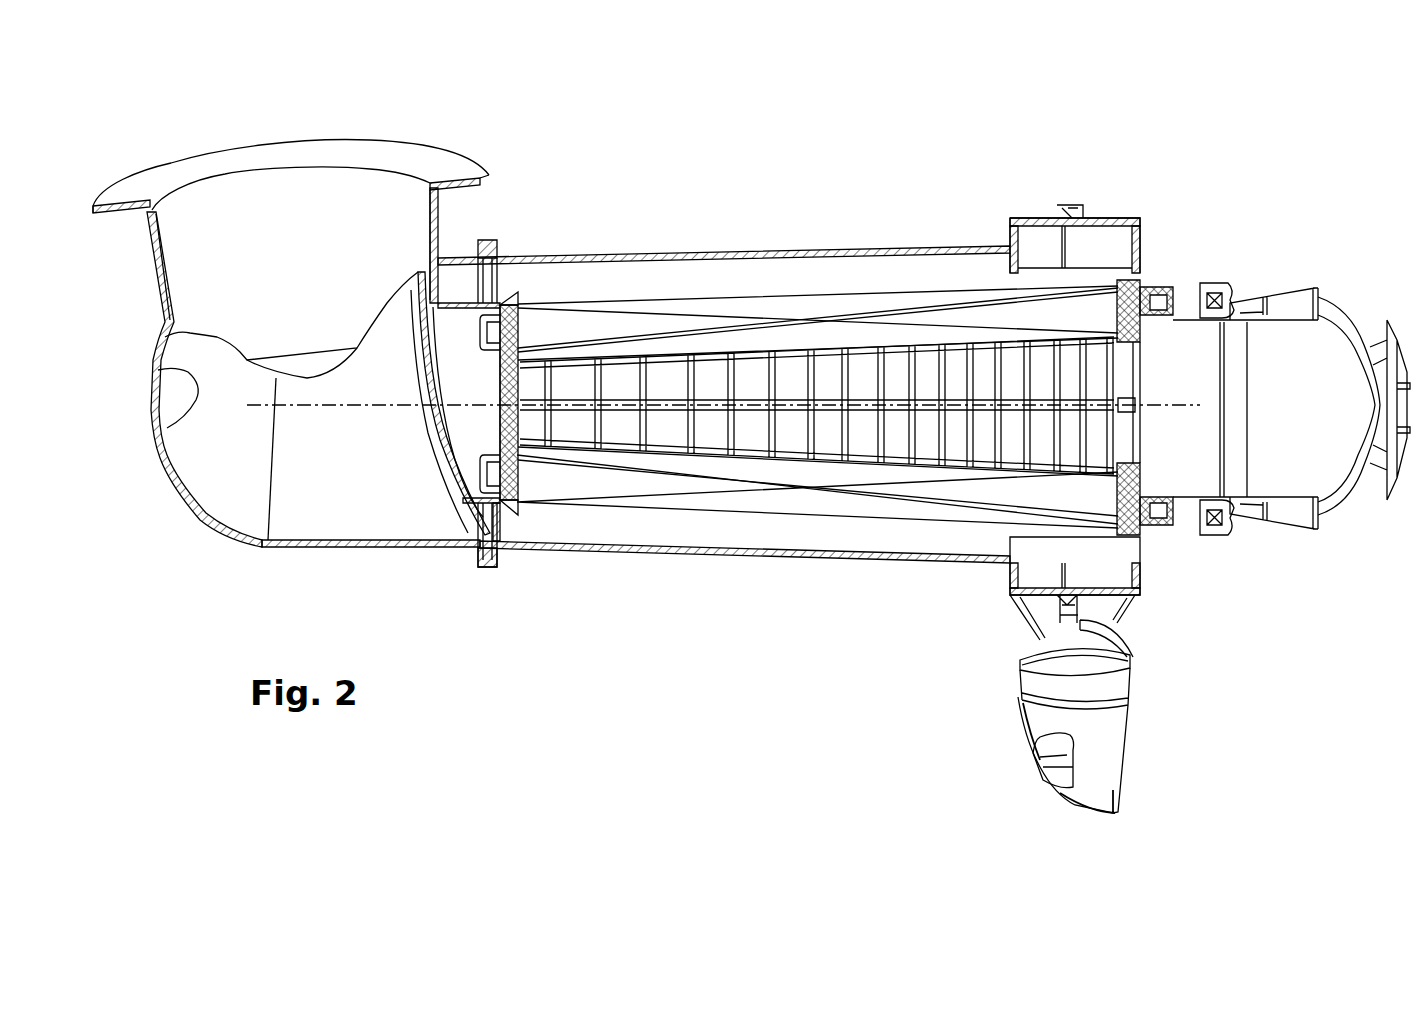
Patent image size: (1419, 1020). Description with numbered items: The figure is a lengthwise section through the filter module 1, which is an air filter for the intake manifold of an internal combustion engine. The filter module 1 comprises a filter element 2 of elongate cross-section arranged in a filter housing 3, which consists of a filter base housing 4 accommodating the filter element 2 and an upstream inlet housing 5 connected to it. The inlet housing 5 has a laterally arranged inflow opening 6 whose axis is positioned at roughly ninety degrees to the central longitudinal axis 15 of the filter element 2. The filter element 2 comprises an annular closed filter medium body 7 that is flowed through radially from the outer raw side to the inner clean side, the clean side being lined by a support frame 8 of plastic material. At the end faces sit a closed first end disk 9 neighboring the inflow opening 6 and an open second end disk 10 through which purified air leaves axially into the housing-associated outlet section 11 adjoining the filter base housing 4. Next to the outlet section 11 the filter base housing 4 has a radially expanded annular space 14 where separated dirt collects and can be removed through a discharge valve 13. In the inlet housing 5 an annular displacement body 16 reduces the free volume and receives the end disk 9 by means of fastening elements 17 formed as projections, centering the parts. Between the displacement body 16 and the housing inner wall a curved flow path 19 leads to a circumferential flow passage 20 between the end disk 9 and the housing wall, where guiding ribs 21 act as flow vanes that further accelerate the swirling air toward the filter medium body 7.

The filter module 1 is at (718, 103).
The filter element 2 is at (606, 300).
The filter housing 3 is at (676, 255).
The filter base housing 4 is at (745, 257).
The inlet housing 5 is at (155, 268).
The inflow opening 6 is at (346, 186).
The filter medium body 7 is at (732, 497).
The support frame 8 is at (787, 408).
The first end disk 9 is at (515, 475).
The second end disk 10 is at (1118, 308).
The outlet section 11 is at (1342, 500).
The discharge valve 13 is at (1120, 726).
The annular space 14 is at (1108, 583).
The central longitudinal axis 15 is at (383, 406).
The displacement body 16 is at (214, 354).
The fastening elements 17 is at (485, 338).
The flow path 19 is at (173, 388).
The flow passage 20 is at (466, 286).
The guiding ribs 21 is at (487, 278).